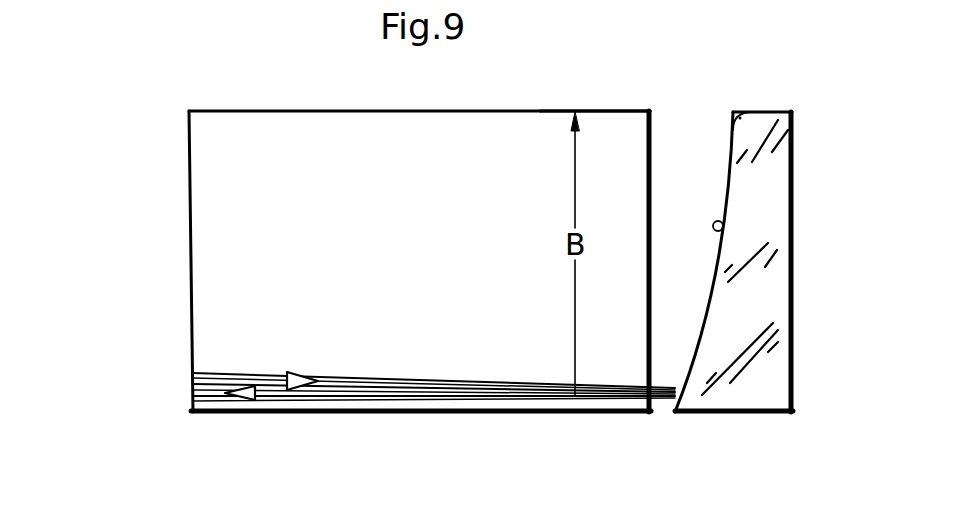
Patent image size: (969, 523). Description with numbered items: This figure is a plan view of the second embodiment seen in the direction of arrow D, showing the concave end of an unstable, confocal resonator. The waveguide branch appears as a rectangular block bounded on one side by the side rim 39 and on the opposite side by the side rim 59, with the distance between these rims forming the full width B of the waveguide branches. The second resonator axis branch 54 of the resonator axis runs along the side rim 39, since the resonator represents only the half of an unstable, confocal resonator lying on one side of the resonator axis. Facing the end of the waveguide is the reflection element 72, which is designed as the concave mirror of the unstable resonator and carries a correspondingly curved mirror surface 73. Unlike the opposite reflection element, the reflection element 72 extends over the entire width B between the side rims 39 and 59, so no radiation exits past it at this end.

The second resonator axis branch 54 is at (288, 112).
The side rim 39 is at (585, 112).
The reflection element 72 is at (747, 318).
The curved mirror surface 73 is at (722, 225).
The side rim 59 is at (258, 413).